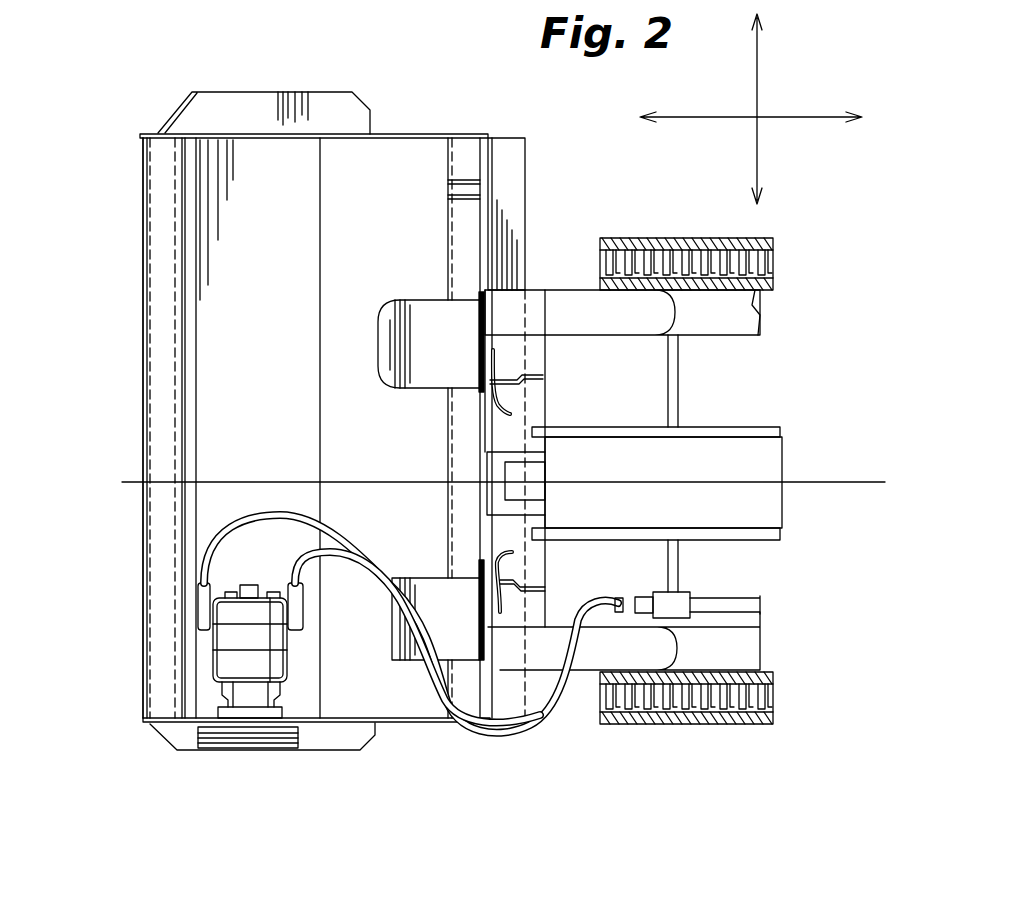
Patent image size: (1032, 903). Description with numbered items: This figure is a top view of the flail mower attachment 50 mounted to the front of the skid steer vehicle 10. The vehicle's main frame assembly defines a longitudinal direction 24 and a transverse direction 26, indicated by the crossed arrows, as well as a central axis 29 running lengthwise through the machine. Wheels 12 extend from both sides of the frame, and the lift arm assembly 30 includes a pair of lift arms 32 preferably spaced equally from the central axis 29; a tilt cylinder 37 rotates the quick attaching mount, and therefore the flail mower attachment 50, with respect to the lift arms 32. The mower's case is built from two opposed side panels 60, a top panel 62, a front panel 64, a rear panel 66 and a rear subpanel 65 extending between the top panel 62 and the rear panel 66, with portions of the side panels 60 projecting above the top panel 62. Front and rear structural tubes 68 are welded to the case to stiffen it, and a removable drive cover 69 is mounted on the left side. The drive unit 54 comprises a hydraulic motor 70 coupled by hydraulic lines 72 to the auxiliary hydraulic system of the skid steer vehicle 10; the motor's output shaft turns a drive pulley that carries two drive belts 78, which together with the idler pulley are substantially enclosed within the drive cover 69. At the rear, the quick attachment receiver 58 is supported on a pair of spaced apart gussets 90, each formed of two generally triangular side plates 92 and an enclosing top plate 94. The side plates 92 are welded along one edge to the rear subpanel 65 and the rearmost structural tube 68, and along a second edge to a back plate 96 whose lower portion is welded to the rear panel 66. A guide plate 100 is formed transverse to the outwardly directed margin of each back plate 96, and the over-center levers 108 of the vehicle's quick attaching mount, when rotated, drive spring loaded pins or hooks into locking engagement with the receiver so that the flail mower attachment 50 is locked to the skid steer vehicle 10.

The skid steer vehicle 10 is at (764, 230).
The wheels 12 is at (775, 275).
The longitudinal direction 24 is at (812, 118).
The transverse direction 26 is at (760, 80).
The central axis 29 is at (130, 482).
The lift arm assembly 30 is at (622, 240).
The lift arms 32 is at (617, 330).
The tilt cylinder 37 is at (510, 552).
The flail mower attachment 50 is at (143, 108).
The drive unit 54 is at (287, 641).
The quick attachment receiver 58 is at (563, 285).
The side panels 60 is at (397, 133).
The top panel 62 is at (253, 282).
The front panel 64 is at (147, 488).
The rear subpanel 65 is at (347, 157).
The rear panel 66 is at (508, 147).
The structural tubes 68 is at (157, 592).
The drive cover 69 is at (162, 740).
The hydraulic motor 70 is at (213, 643).
The hydraulic lines 72 is at (482, 737).
The drive belts 78 is at (262, 749).
The gussets 90 is at (420, 396).
The side plates 92 is at (420, 300).
The top plate 94 is at (453, 338).
The back plate 96 is at (467, 285).
The guide plate 100 is at (528, 277).
The over-center levers 108 is at (510, 405).